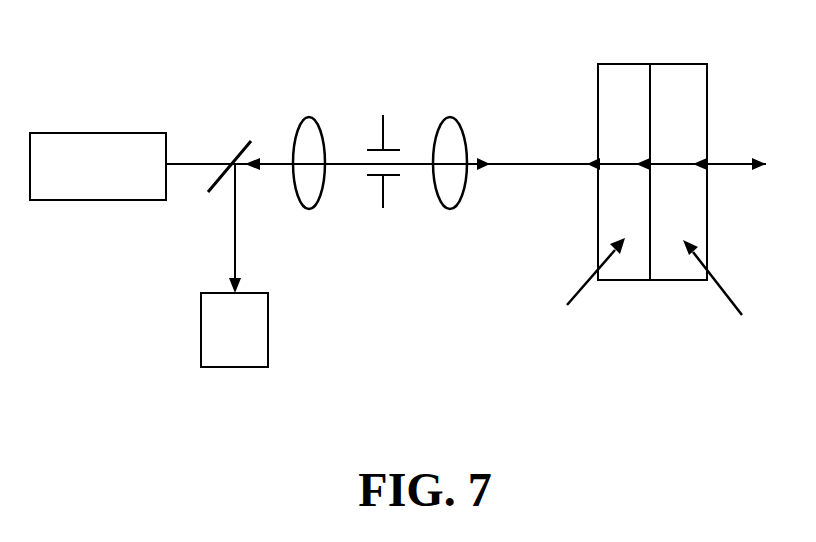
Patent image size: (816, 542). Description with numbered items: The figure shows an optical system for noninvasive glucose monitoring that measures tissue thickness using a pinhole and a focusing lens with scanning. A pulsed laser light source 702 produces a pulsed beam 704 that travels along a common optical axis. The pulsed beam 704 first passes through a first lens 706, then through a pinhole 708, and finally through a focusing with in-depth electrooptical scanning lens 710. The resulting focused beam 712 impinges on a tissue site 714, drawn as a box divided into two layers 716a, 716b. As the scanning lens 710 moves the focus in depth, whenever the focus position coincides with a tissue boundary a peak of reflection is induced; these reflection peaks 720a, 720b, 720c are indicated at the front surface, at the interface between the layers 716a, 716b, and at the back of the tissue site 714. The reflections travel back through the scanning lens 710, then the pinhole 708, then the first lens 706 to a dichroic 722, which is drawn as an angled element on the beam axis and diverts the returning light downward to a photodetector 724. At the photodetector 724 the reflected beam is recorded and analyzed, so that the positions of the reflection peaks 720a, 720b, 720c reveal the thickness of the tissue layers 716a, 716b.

The pulsed laser light source 702 is at (98, 166).
The pulsed beam 704 is at (195, 167).
The first lens 706 is at (307, 137).
The pinhole 708 is at (383, 184).
The focusing with in-depth electrooptical scanning lens 710 is at (451, 124).
The focused beam 712 is at (518, 167).
The tissue site 714 is at (656, 300).
The first tissue layer 716a is at (590, 200).
The second tissue layer 716b is at (715, 205).
The reflection peak at first boundary 720a is at (597, 162).
The reflection peak at second boundary 720b is at (642, 162).
The reflection peak at third boundary 720c is at (697, 162).
The dichroic 722 is at (233, 150).
The photodetector 724 is at (234, 330).